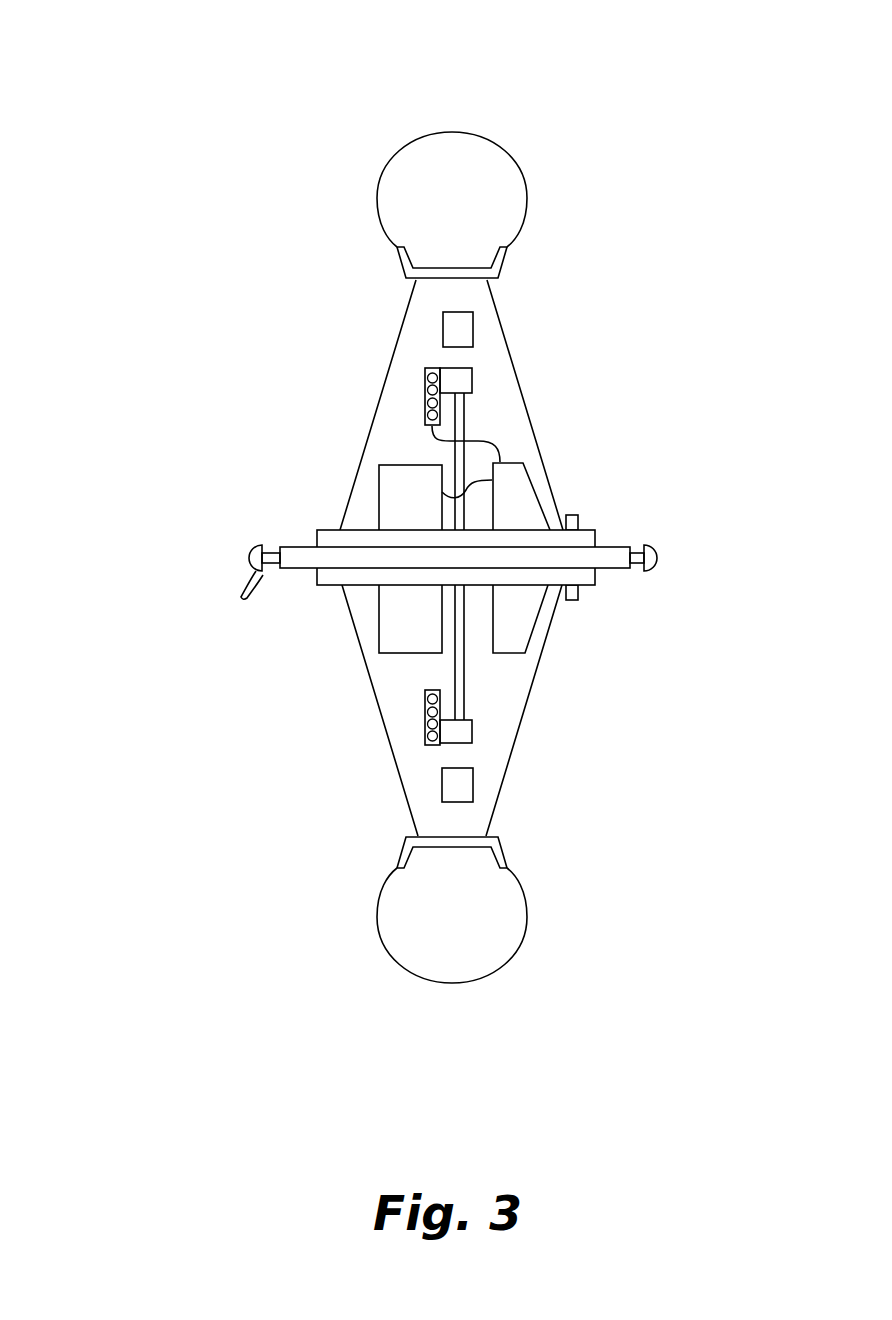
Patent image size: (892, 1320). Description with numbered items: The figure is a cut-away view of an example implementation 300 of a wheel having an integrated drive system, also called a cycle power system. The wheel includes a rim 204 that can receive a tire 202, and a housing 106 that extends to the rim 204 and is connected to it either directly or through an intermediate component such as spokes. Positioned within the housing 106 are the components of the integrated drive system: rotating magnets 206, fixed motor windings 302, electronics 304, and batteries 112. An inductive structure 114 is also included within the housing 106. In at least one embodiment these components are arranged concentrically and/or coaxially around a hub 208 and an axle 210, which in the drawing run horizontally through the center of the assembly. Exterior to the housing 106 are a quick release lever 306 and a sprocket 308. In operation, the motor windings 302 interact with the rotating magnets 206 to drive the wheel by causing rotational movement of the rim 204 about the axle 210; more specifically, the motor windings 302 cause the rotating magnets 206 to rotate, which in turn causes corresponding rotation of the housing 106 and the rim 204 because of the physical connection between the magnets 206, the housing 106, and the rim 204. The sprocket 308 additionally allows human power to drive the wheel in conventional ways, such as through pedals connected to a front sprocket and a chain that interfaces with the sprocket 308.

The example implementation of a wheel having an integrated drive system 300 is at (156, 56).
The tire 202 is at (403, 148).
The rim 204 is at (400, 262).
The rotating magnets 206 is at (473, 330).
The housing 106 is at (396, 345).
The inductive structure 114 is at (426, 402).
The fixed motor windings 302 is at (472, 378).
The batteries 112 is at (393, 465).
The electronics 304 is at (508, 460).
The hub 208 is at (340, 530).
The axle 210 is at (297, 547).
The sprocket 308 is at (578, 514).
The quick release lever 306 is at (240, 597).